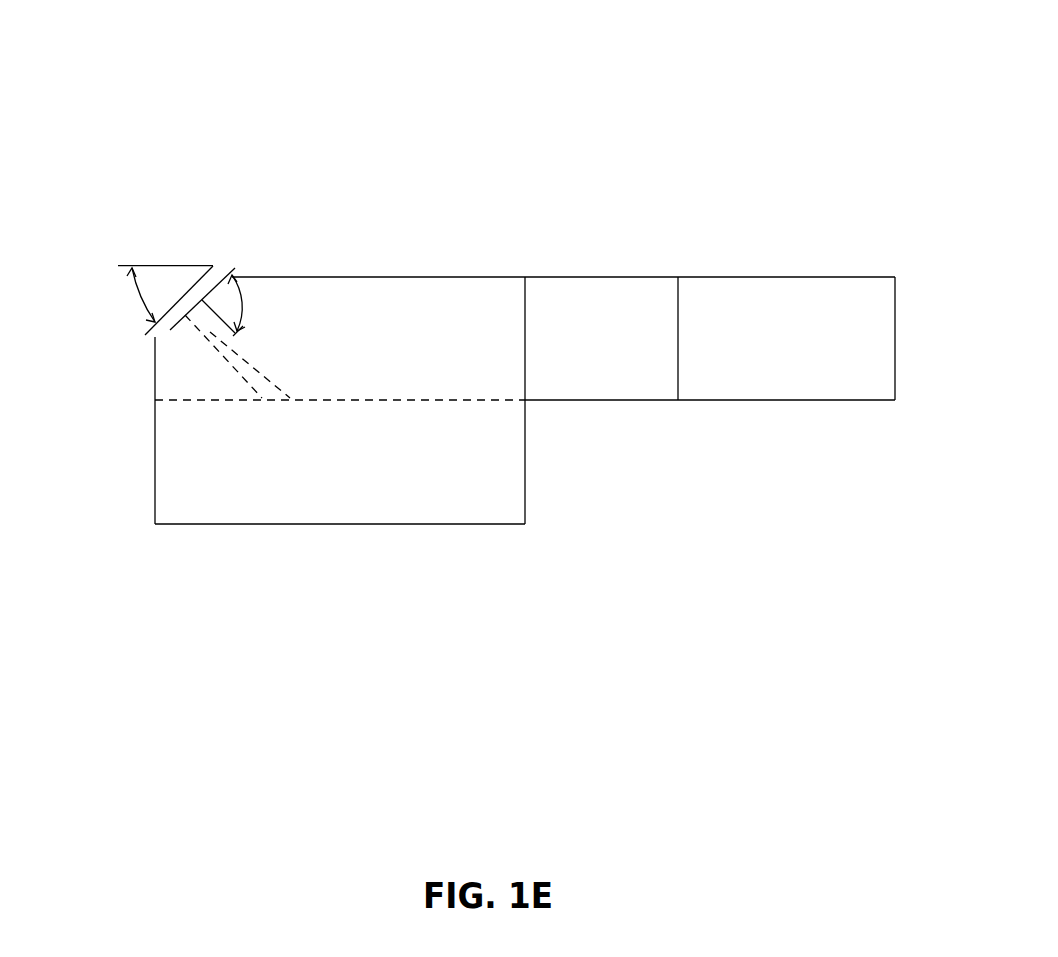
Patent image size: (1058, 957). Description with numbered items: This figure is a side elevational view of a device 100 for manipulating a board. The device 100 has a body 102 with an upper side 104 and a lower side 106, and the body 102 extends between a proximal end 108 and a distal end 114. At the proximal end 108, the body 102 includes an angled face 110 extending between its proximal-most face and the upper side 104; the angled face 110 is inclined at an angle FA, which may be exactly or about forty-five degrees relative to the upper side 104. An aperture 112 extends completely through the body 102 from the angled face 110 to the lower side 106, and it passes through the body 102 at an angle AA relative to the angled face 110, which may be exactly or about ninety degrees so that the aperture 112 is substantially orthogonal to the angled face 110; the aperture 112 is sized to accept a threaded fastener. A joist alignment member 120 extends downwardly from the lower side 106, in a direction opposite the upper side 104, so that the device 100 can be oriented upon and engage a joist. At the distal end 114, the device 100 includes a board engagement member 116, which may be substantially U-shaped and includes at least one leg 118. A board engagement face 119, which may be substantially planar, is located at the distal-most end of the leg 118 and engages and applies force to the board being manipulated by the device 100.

The device 100 is at (367, 95).
The body 102 is at (320, 221).
The upper side 104 is at (447, 277).
The lower side 106 is at (492, 400).
The proximal end 108 is at (139, 187).
The angled face 110 is at (153, 325).
The aperture 112 is at (227, 347).
The distal end 114 is at (804, 196).
The board engagement member 116 is at (741, 451).
The leg 118 is at (817, 375).
The board engagement face 119 is at (897, 352).
The joist alignment member 120 is at (263, 460).